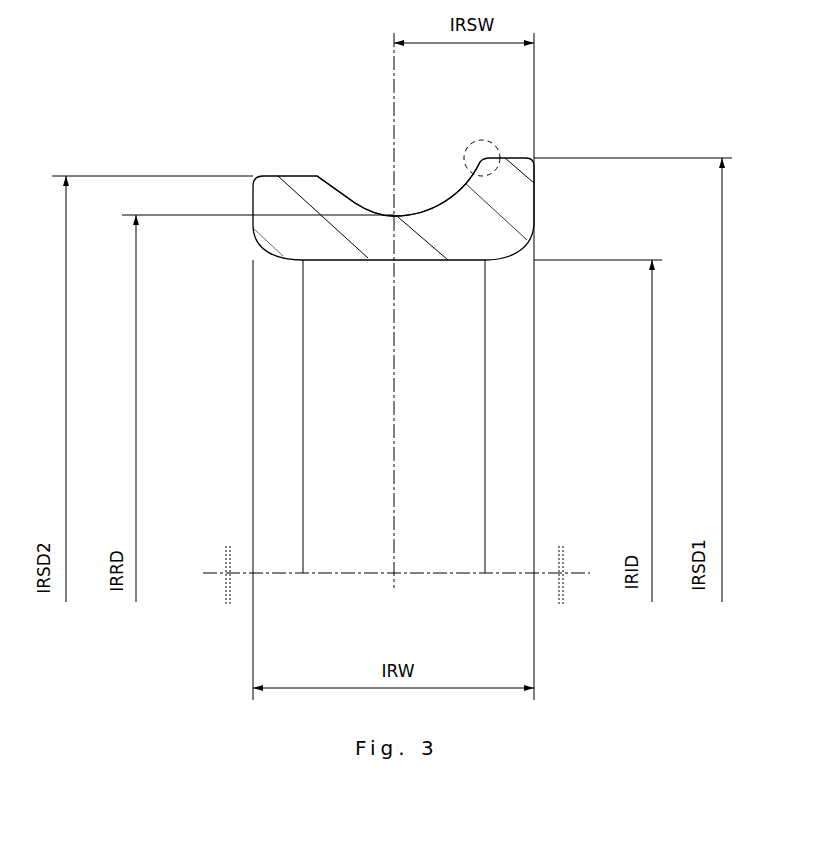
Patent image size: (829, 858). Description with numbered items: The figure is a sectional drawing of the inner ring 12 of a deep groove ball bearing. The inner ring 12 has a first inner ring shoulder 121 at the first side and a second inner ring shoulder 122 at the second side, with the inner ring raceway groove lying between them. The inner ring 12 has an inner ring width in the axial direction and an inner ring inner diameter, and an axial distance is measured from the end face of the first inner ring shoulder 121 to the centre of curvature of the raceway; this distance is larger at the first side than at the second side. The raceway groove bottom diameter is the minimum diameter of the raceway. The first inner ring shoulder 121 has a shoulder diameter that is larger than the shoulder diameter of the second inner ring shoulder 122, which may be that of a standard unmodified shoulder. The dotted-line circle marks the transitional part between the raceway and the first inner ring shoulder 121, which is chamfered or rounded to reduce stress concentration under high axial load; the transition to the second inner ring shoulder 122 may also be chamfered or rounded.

The inner ring 12 is at (292, 240).
The first inner ring shoulder 121 is at (505, 158).
The second inner ring shoulder 122 is at (278, 175).